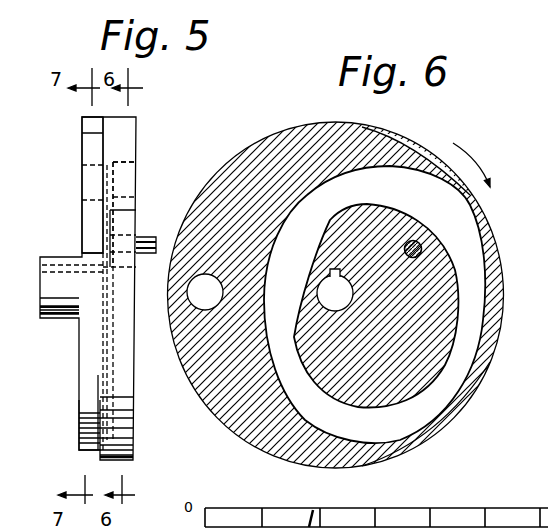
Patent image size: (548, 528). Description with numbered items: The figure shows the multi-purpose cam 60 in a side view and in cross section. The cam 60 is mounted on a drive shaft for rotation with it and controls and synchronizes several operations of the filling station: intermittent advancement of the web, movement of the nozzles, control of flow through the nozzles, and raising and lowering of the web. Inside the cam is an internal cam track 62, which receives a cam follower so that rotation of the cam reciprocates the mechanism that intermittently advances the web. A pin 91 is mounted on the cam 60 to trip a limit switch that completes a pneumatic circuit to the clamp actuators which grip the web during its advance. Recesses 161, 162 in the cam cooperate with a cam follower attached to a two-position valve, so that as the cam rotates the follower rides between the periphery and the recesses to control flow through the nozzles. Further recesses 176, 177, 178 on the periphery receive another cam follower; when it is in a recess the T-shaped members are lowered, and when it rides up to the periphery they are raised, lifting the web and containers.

In FIG. 5, the multi-purpose cam 60 is at (141, 119).
In FIG. 6, the multi-purpose cam 60 is at (287, 124).
In FIG. 6, the internal cam track 62 is at (427, 395).
In FIG. 5, the pin 91 is at (150, 255).
In FIG. 6, the pin 91 is at (415, 258).
In FIG. 5, the recess 161 is at (82, 410).
In FIG. 5, the recess 162 is at (96, 177).
In FIG. 5, the recess 176 is at (127, 225).
In FIG. 6, the recess 176 is at (182, 320).
In FIG. 6, the recess 177 is at (406, 149).
In FIG. 6, the recess 178 is at (423, 430).